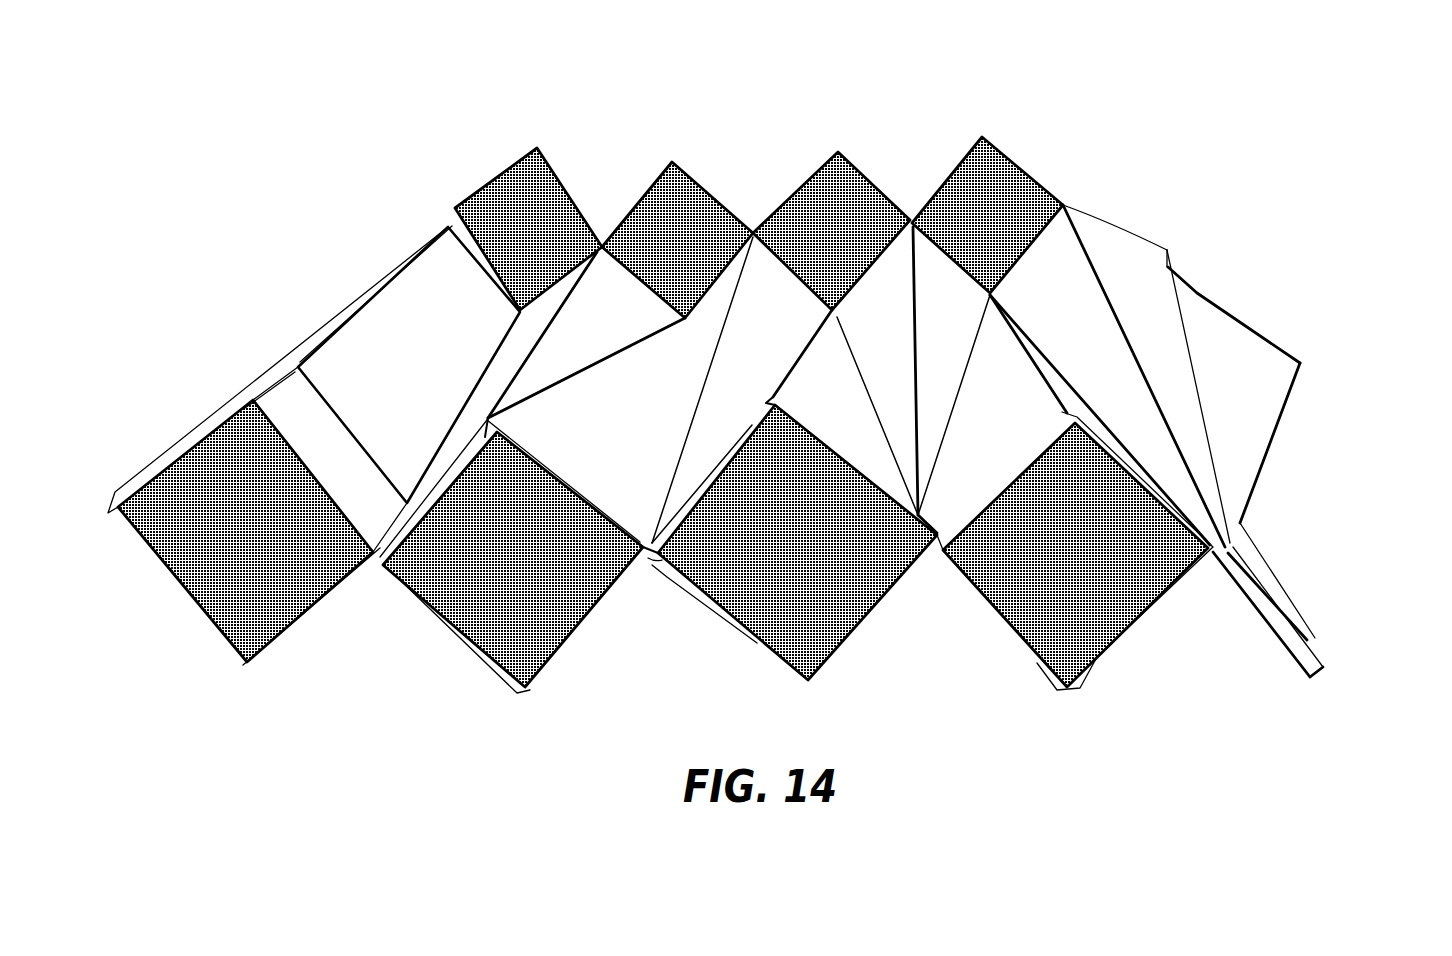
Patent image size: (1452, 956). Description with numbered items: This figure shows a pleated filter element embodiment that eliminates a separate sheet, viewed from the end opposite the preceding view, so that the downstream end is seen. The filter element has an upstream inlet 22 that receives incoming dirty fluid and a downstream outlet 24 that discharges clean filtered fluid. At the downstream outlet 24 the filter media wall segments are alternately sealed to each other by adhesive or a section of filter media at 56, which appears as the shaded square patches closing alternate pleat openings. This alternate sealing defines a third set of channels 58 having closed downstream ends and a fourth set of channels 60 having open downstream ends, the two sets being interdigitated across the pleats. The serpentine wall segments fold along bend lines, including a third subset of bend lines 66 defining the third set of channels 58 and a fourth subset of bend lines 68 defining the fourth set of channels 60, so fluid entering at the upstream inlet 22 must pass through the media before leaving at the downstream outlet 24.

The upstream inlet 22 is at (717, 347).
The downstream outlet 24 is at (776, 545).
The adhesive or section of filter media 56 is at (1003, 177).
The third set of channels 58 is at (500, 583).
The fourth set of channels 60 is at (862, 447).
The third subset of bend lines 66 is at (647, 537).
The fourth subset of bend lines 68 is at (767, 415).